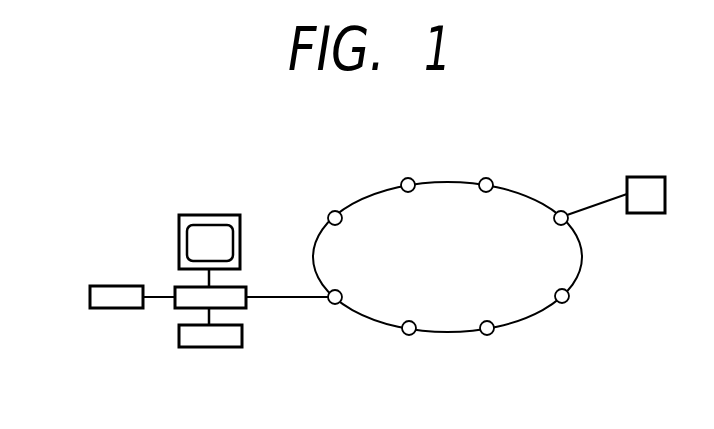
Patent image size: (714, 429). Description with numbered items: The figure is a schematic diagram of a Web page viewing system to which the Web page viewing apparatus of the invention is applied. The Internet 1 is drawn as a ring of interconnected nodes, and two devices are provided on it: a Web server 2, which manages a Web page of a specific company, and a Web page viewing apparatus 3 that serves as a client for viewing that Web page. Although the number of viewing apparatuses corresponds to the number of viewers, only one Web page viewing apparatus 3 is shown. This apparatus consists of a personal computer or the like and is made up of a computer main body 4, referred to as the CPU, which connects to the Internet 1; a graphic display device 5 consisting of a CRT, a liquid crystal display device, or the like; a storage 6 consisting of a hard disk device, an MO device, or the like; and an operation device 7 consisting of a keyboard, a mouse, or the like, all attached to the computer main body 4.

The Internet 1 is at (471, 163).
The Web server 2 is at (645, 177).
The Web page viewing apparatus 3 is at (117, 236).
The computer main body 4 is at (175, 287).
The graphic display device 5 is at (215, 215).
The storage 6 is at (108, 285).
The operation device 7 is at (200, 348).